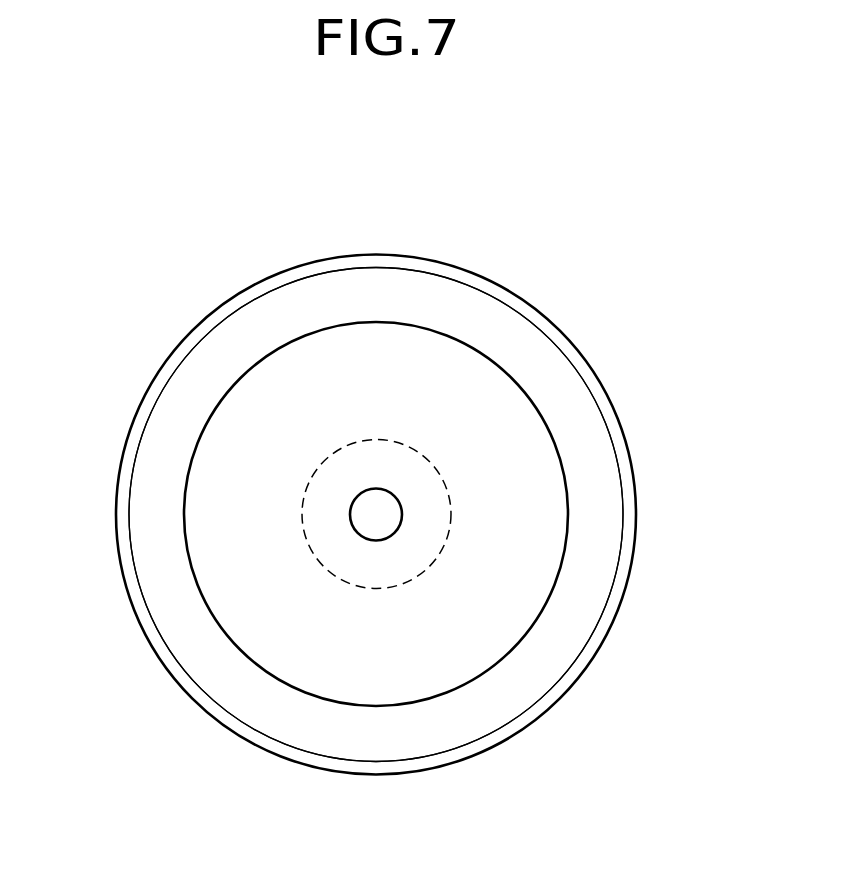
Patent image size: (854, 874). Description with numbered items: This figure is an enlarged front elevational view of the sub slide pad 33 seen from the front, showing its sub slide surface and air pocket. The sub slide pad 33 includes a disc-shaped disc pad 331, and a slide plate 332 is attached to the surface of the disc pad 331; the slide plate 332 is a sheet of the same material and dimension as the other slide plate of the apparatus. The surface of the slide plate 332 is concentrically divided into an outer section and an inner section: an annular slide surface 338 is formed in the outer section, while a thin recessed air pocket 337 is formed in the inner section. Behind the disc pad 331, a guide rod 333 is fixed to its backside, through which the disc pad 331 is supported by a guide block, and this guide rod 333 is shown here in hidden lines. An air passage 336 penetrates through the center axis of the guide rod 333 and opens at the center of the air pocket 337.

The sub slide pad 33 is at (178, 226).
The disc pad 331 is at (557, 323).
The slide plate 332 is at (376, 515).
The guide rod 333 is at (323, 465).
The air passage 336 is at (352, 523).
The air pocket 337 is at (523, 542).
The slide surface 338 is at (587, 450).